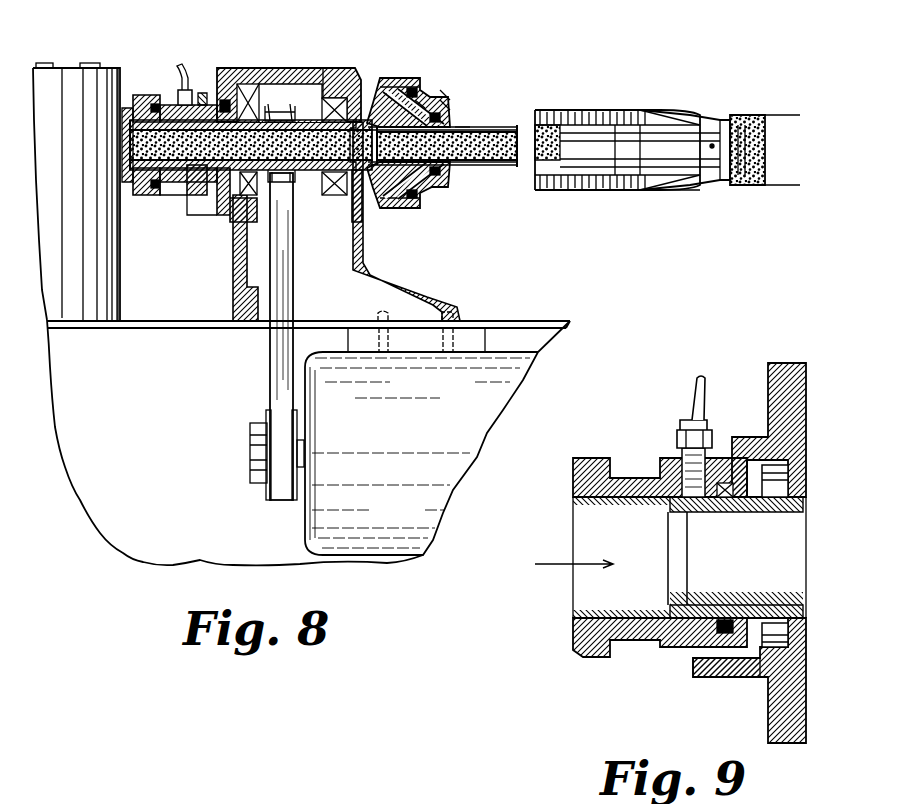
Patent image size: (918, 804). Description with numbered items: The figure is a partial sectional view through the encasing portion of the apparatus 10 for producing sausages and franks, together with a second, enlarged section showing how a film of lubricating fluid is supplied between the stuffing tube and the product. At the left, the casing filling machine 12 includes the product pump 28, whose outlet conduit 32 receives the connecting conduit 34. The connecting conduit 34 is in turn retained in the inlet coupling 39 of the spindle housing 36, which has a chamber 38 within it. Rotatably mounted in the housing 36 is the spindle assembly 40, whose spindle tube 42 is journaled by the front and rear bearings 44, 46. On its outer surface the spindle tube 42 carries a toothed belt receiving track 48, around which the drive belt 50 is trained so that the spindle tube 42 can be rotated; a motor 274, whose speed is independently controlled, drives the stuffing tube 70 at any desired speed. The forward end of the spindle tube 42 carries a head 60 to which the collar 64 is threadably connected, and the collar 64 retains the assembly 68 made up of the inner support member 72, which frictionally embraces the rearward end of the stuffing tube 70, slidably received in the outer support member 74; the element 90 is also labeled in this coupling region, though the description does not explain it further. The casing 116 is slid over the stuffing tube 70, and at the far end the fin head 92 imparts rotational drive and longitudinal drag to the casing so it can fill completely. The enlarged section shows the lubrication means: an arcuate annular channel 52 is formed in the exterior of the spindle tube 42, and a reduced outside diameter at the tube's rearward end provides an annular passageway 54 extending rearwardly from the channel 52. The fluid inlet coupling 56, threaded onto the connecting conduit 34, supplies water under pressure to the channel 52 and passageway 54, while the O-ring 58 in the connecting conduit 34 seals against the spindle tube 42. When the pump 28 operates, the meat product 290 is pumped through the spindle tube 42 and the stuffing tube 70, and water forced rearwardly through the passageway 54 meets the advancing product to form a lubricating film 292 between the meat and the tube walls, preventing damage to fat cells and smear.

In FIG. 8, the apparatus for encasing a product 10 is at (72, 42).
In FIG. 8, the casing filling machine 12 is at (400, 34).
In FIG. 8, the product pump 28 is at (100, 83).
In FIG. 8, the outlet conduit 32 is at (133, 100).
In FIG. 8, the connecting conduit 34 is at (165, 105).
In FIG. 9, the connecting conduit 34 is at (618, 478).
In FIG. 8, the spindle housing 36 is at (293, 67).
In FIG. 9, the spindle housing 36 is at (787, 363).
In FIG. 8, the chamber 38 is at (303, 87).
In FIG. 8, the inlet coupling 39 is at (203, 105).
In FIG. 9, the inlet coupling 39 is at (733, 440).
In FIG. 8, the spindle assembly 40 is at (363, 117).
In FIG. 8, the spindle tube 42 is at (216, 97).
In FIG. 9, the spindle tube 42 is at (750, 497).
In FIG. 8, the front bearing 44 is at (358, 110).
In FIG. 8, the rear bearing 46 is at (248, 102).
In FIG. 8, the belt receiving track 48 is at (272, 115).
In FIG. 8, the drive belt 50 is at (270, 372).
In FIG. 8, the arcuate annular channel 52 is at (182, 125).
In FIG. 9, the arcuate annular channel 52 is at (677, 511).
In FIG. 8, the annular passageway 54 is at (182, 162).
In FIG. 9, the annular passageway 54 is at (670, 602).
In FIG. 8, the fluid inlet coupling 56 is at (188, 66).
In FIG. 9, the fluid inlet coupling 56 is at (690, 393).
In FIG. 8, the O-ring 58 is at (200, 172).
In FIG. 9, the O-ring 58 is at (723, 633).
In FIG. 8, the head 60 is at (397, 207).
In FIG. 8, the collar 64 is at (452, 110).
In FIG. 8, the assembly 68 is at (447, 100).
In FIG. 8, the stuffing tube 70 is at (507, 128).
In FIG. 8, the inner support member 72 is at (462, 127).
In FIG. 8, the outer support member 74 is at (423, 107).
In FIG. 8, the coupling housing 90 is at (413, 77).
In FIG. 8, the fin head 92 is at (704, 132).
In FIG. 8, the casing 116 is at (592, 190).
In FIG. 8, the motor 274 is at (429, 449).
In FIG. 8, the meat product 290 is at (495, 153).
In FIG. 9, the lubricating film 292 is at (746, 513).